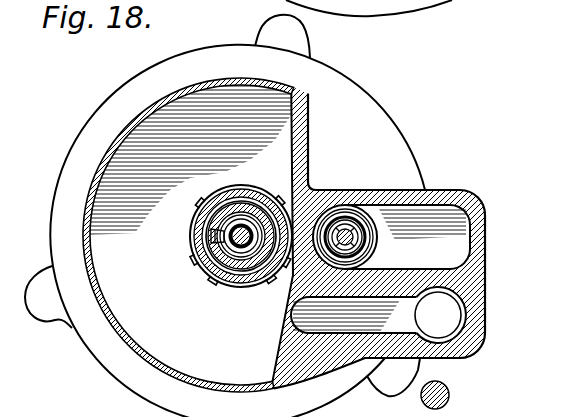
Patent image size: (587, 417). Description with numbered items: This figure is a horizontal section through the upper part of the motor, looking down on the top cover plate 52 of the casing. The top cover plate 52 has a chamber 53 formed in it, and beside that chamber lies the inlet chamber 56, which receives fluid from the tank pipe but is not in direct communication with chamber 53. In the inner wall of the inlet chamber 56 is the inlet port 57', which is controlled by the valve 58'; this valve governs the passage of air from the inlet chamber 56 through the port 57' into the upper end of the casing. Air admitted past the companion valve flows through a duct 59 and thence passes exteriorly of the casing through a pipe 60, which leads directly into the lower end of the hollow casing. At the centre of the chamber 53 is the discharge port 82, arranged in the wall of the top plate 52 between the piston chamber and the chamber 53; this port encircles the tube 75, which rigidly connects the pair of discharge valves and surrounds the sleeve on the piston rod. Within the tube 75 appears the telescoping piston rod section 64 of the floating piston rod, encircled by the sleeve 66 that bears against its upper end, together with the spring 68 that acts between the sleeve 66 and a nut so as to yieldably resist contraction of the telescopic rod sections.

The top cover plate 52 is at (130, 103).
The chamber 53 is at (118, 180).
The inlet port 57' is at (379, 238).
The inlet chamber 56 is at (458, 234).
The valve 58' is at (345, 219).
The duct 59 is at (296, 316).
The pipe 60 is at (464, 312).
The tube 75 is at (258, 184).
The discharge port 82 is at (220, 184).
The sleeve 66 is at (225, 278).
The spring 68 is at (224, 232).
The piston rod section 64 is at (236, 238).